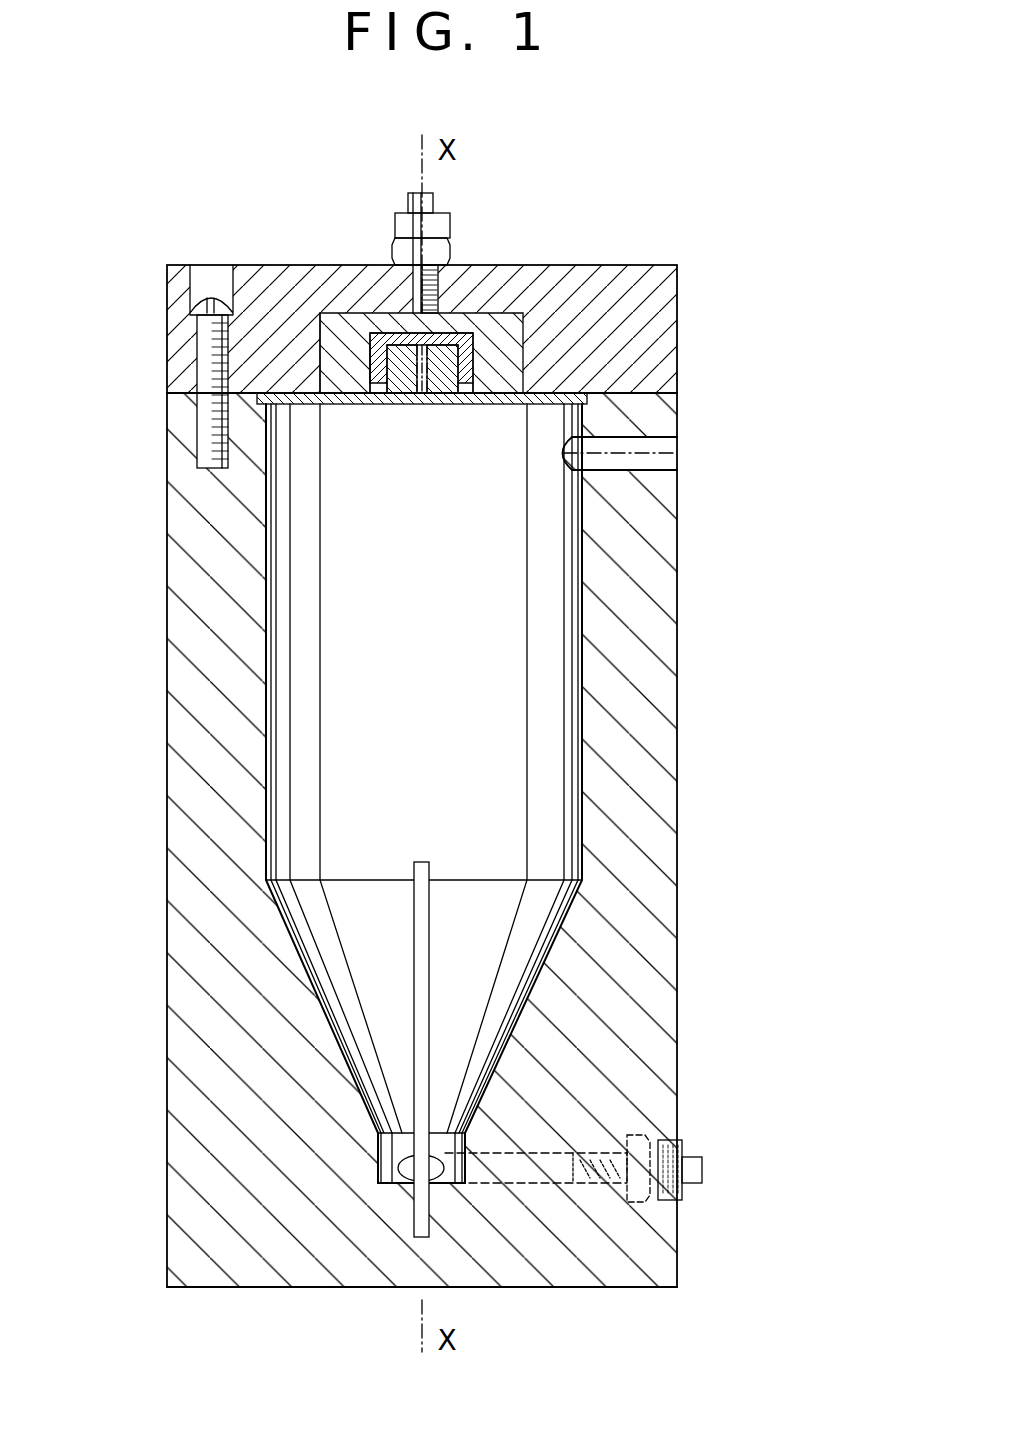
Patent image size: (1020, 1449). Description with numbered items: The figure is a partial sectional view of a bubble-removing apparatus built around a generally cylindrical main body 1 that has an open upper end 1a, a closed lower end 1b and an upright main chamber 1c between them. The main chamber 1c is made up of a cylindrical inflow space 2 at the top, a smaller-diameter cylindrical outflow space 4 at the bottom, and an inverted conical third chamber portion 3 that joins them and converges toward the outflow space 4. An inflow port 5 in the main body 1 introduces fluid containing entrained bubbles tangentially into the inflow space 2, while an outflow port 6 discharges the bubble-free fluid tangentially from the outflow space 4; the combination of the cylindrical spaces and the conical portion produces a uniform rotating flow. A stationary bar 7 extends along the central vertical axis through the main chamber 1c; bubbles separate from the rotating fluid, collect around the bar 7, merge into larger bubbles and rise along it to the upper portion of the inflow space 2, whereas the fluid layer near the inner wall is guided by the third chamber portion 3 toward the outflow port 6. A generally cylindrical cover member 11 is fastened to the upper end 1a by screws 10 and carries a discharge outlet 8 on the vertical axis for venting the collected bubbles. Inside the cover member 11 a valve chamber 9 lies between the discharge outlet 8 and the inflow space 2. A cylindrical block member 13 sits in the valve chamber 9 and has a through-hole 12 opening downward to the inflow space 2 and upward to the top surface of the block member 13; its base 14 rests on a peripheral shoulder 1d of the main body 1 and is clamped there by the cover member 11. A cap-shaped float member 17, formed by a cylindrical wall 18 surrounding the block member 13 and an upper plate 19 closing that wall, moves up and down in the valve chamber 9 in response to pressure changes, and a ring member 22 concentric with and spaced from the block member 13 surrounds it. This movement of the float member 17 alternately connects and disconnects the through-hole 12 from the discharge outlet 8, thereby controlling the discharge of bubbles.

The main body 1 is at (655, 578).
The open upper end 1a is at (577, 392).
The closed lower end 1b is at (540, 1287).
The main chamber 1c is at (490, 703).
The peripheral shoulder 1d is at (266, 408).
The inflow space 2 is at (578, 800).
The third chamber portion 3 is at (527, 997).
The outflow space 4 is at (380, 1150).
The inflow port 5 is at (660, 452).
The outflow port 6 is at (540, 1177).
The bar 7 is at (420, 928).
The discharge outlet 8 is at (417, 298).
The valve chamber 9 is at (510, 317).
The screws 10 is at (205, 300).
The cover member 11 is at (628, 323).
The through-hole 12 is at (422, 395).
The block member 13 is at (400, 363).
The base 14 is at (512, 395).
The float member 17 is at (373, 367).
The cylindrical wall 18 is at (482, 375).
The upper plate 19 is at (460, 333).
The ring member 22 is at (345, 347).